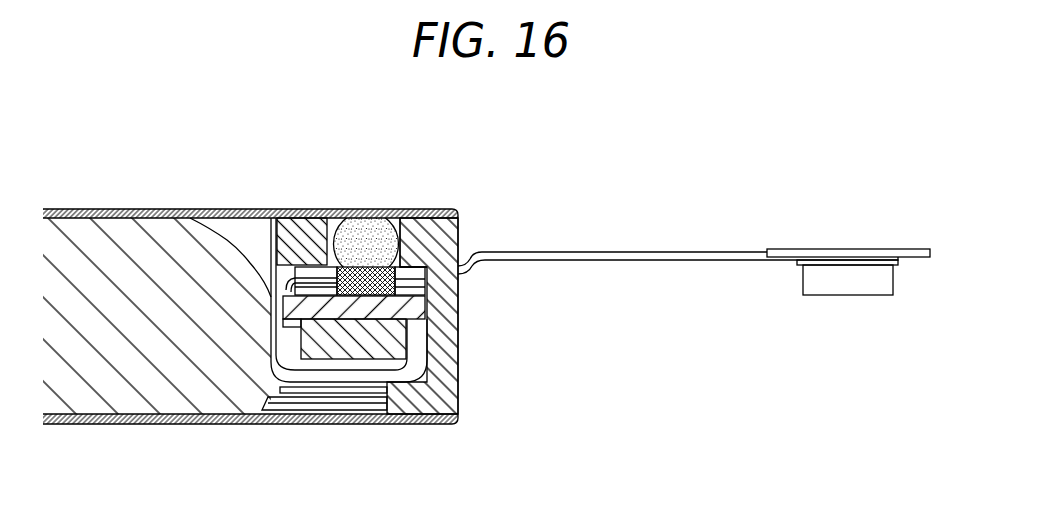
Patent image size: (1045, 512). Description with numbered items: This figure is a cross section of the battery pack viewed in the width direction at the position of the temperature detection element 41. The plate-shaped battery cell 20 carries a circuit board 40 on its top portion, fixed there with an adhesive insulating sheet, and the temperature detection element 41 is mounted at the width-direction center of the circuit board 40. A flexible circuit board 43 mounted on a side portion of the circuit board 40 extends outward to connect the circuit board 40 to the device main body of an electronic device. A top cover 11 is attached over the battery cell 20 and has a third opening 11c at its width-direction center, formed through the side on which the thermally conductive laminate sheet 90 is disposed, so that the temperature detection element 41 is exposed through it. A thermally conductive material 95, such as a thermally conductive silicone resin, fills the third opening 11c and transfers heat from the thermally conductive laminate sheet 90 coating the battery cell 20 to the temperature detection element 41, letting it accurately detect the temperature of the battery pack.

The top cover 11 is at (435, 210).
The third opening 11c is at (396, 213).
The battery cell 20 is at (119, 227).
The circuit board 40 is at (311, 312).
The temperature detection element 41 is at (406, 326).
The flexible circuit board 43 is at (633, 252).
The thermally conductive laminate sheet 90 is at (241, 209).
The thermally conductive material 95 is at (363, 216).